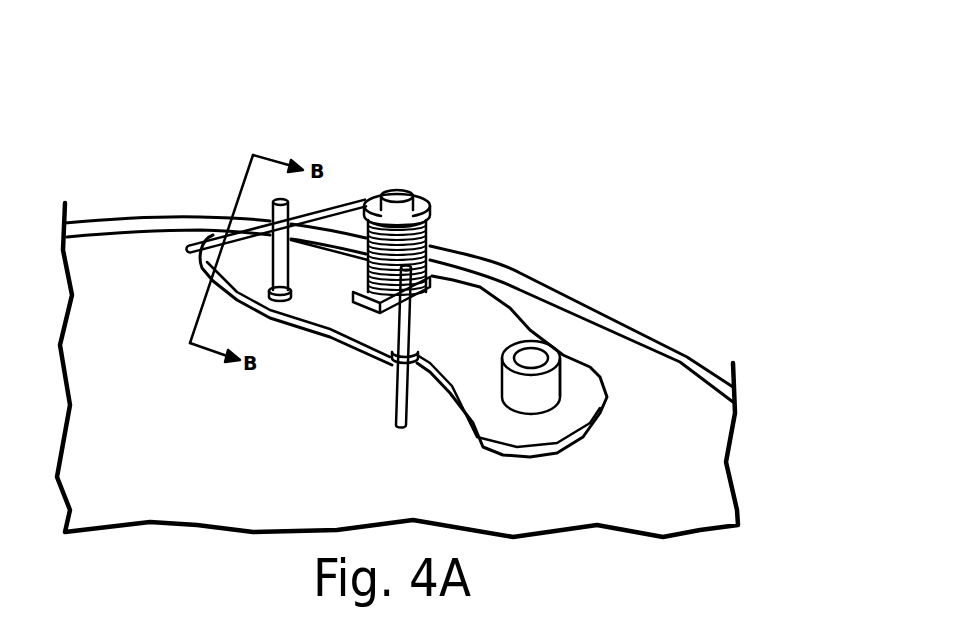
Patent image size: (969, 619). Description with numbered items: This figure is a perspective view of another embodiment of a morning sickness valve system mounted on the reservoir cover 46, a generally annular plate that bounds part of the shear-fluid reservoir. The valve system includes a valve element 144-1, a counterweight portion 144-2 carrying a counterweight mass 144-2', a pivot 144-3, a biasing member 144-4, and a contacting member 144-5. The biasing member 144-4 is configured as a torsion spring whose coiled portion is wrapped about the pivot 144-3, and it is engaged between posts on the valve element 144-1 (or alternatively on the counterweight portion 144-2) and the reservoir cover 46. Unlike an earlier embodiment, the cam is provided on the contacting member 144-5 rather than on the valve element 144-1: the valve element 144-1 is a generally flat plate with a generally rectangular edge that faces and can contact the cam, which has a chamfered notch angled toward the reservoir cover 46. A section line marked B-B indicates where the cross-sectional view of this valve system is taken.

The reservoir cover 46 is at (657, 390).
The valve element 144-1 is at (248, 272).
The counterweight portion 144-2 is at (553, 468).
The counterweight mass 144-2' is at (698, 435).
The pivot 144-3 is at (397, 200).
The biasing member 144-4 is at (430, 230).
The contacting member 144-5 is at (563, 287).